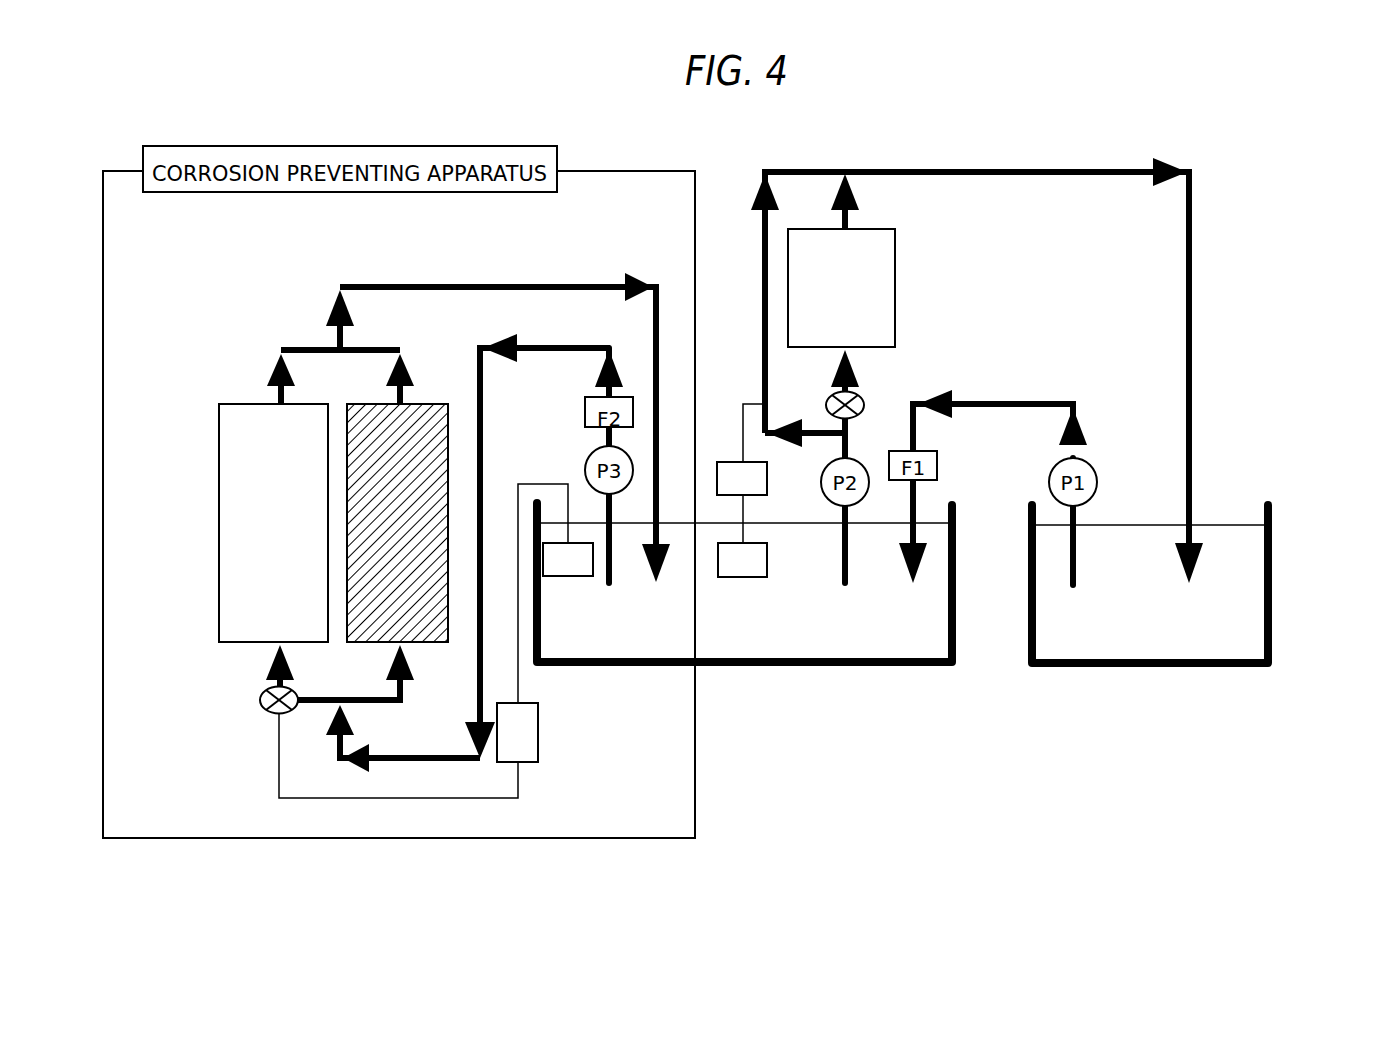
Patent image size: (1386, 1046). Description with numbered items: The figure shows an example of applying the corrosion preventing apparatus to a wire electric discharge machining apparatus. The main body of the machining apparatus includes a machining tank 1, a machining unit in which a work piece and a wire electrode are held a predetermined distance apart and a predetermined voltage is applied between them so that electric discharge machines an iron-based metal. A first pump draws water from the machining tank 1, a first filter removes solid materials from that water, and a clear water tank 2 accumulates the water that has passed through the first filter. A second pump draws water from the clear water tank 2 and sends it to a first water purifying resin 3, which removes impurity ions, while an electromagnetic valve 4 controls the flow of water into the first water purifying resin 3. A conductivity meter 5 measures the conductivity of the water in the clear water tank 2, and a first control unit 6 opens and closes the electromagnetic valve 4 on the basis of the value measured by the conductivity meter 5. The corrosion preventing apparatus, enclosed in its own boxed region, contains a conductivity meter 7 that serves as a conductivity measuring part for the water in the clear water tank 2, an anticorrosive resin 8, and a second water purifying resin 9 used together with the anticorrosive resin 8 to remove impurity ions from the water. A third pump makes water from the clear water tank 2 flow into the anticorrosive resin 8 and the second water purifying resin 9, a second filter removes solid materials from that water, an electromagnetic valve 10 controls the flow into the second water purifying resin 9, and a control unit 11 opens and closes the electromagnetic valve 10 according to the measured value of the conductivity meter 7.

The machining tank 1 is at (1105, 663).
The clear water tank 2 is at (785, 663).
The first water purifying resin 3 is at (898, 268).
The electromagnetic valve 4 is at (858, 395).
The conductivity meter 5 is at (730, 577).
The first control unit 6 is at (732, 462).
The conductivity meter 7 is at (577, 576).
The anticorrosive resin 8 is at (427, 403).
The second water purifying resin 9 is at (243, 403).
The electromagnetic valve 10 is at (262, 705).
The control unit 11 is at (538, 760).